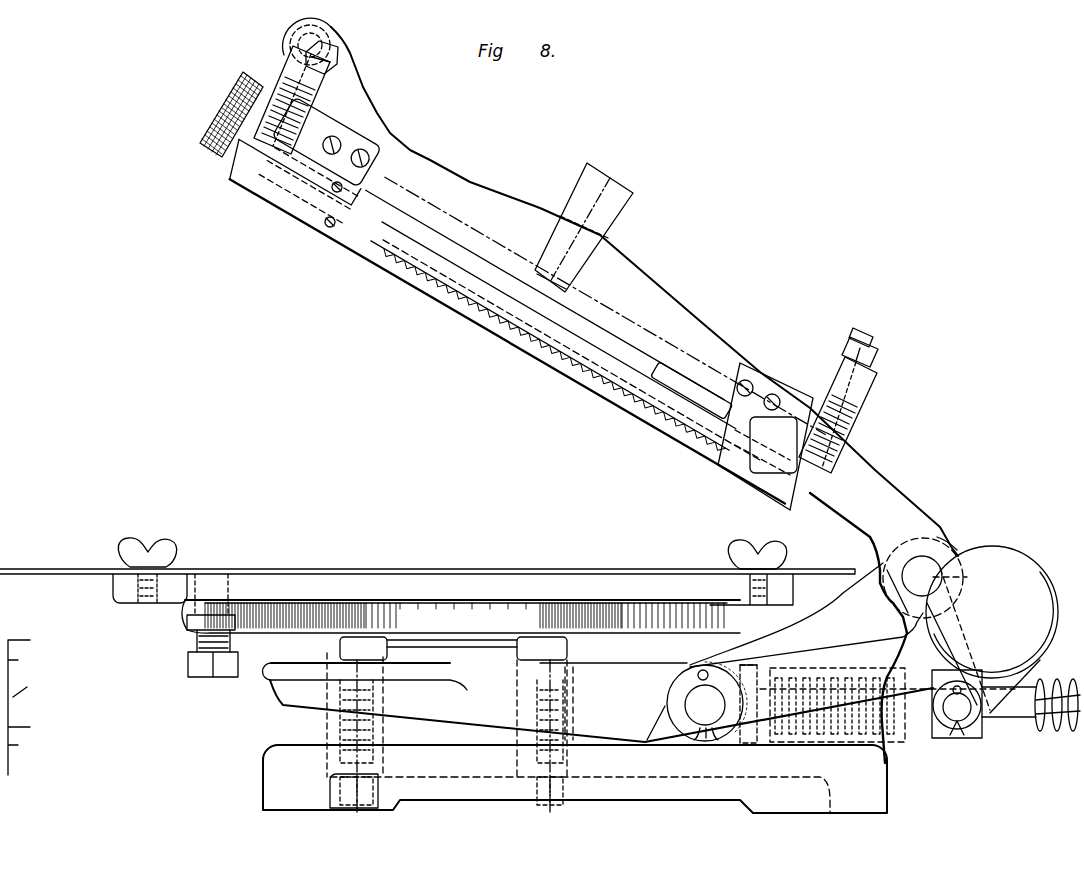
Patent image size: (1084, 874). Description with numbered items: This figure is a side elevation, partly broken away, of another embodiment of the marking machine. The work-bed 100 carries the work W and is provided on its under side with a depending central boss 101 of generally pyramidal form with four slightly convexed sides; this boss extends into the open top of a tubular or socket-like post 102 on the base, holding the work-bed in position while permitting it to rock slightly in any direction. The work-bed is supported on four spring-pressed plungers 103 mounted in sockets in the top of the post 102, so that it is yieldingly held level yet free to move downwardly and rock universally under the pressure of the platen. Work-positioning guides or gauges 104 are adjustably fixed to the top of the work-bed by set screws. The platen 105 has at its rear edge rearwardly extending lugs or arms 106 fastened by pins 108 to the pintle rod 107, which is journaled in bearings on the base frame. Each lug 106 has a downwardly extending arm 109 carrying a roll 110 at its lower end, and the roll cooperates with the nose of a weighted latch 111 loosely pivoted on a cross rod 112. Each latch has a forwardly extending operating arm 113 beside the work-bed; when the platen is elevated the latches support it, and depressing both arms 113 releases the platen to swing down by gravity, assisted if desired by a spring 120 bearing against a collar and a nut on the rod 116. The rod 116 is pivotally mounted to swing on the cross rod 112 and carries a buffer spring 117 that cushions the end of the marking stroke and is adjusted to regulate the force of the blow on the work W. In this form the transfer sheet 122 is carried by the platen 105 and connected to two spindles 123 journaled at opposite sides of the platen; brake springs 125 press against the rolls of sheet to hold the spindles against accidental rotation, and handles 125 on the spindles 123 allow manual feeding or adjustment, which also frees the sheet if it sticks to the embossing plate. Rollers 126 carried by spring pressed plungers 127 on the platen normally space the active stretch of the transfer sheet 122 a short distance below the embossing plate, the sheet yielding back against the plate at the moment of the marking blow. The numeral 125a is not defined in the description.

The work W is at (345, 569).
The work-bed 100 is at (405, 590).
The depending central boss 101 is at (475, 635).
The tubular or socket-like post 102 is at (328, 720).
The spring-pressed plungers 103 is at (340, 640).
The work-positioning guides or gauges 104 is at (60, 569).
The platen 105 is at (582, 325).
The lugs or arms 106 is at (862, 488).
The pintle rod 107 is at (926, 558).
The pins 108 is at (872, 548).
The downwardly extending arm 109 is at (893, 613).
The roll 110 is at (978, 735).
The latch 111 is at (992, 612).
The cross rod 112 is at (707, 701).
The forwardly extending operating arm 113 is at (648, 703).
The rod 116 is at (1020, 716).
The buffer spring 117 is at (1052, 735).
The spring 120 is at (905, 722).
The transfer sheet 122 is at (606, 407).
The spindles 123 is at (300, 127).
The brake springs 125 is at (593, 196).
The compression spring 125a is at (865, 676).
The rollers 126 is at (325, 222).
The spring pressed plungers 127 is at (282, 156).